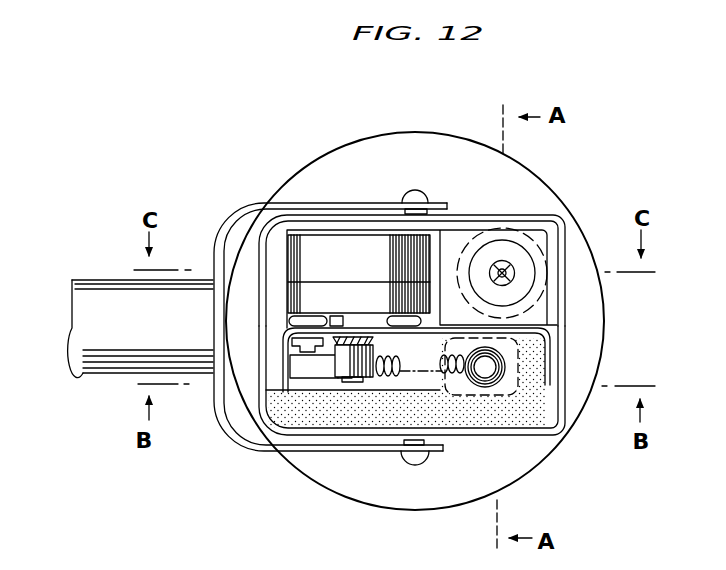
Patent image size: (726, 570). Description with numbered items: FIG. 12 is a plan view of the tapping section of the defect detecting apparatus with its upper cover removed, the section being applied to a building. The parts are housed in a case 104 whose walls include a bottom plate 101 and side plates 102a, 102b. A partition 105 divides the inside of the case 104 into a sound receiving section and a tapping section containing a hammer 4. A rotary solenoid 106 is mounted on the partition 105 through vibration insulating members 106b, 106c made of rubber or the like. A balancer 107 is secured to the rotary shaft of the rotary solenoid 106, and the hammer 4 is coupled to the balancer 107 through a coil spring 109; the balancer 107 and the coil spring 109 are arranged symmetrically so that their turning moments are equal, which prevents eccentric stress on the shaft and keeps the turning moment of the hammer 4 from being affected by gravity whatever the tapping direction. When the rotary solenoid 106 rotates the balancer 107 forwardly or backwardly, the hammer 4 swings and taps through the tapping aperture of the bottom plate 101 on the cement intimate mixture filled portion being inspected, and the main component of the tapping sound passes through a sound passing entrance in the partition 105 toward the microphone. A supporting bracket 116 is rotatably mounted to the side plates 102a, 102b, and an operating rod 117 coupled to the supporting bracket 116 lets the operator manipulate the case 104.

The hammer 4 is at (500, 363).
The bottom plate 101 is at (427, 495).
The side plate 102a is at (523, 433).
The side plate 102b is at (463, 218).
The case 104 is at (528, 215).
The partition 105 is at (545, 335).
The rotary solenoid 106 is at (340, 247).
The vibration insulating member 106b is at (310, 318).
The vibration insulating member 106c is at (400, 318).
The balancer 107 is at (318, 368).
The coil spring 109 is at (410, 370).
The supporting bracket 116 is at (248, 448).
The operating rod 117 is at (100, 365).